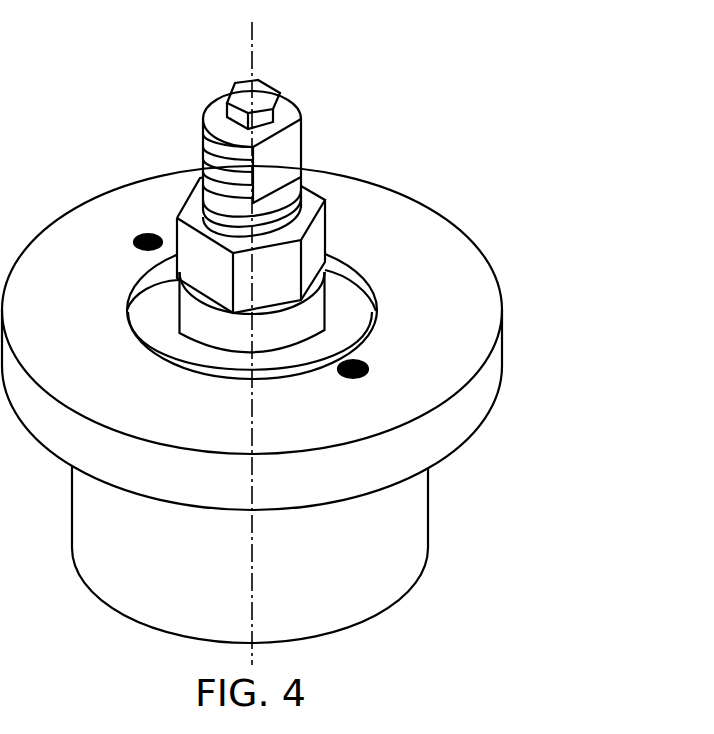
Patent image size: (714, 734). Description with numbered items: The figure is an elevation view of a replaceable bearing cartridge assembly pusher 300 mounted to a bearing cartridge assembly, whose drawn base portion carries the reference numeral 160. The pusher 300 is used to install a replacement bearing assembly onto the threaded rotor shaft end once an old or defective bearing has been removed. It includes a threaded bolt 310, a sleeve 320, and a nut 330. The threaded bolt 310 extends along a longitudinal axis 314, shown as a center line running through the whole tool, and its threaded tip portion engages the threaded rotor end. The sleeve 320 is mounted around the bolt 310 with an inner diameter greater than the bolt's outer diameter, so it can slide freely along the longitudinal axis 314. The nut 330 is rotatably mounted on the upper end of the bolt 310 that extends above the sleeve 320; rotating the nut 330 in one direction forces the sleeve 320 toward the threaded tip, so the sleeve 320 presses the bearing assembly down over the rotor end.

The bearing cartridge assembly pusher 300 is at (457, 166).
The flanged base body 160 is at (490, 368).
The sleeve 320 is at (280, 354).
The nut 330 is at (311, 197).
The threaded bolt 310 is at (217, 153).
The longitudinal axis 314 is at (253, 57).